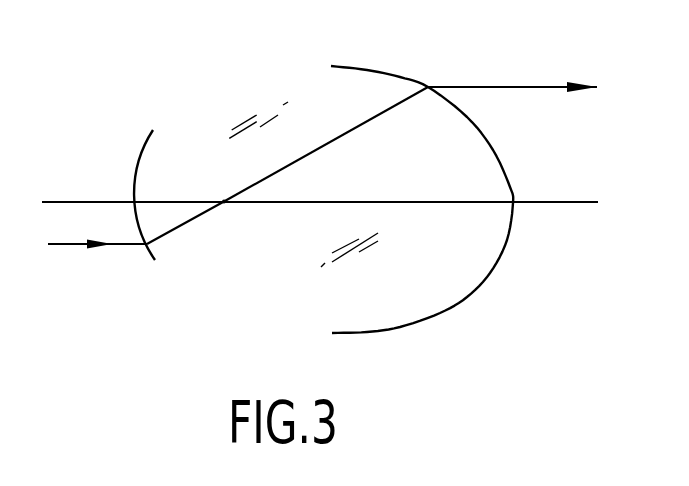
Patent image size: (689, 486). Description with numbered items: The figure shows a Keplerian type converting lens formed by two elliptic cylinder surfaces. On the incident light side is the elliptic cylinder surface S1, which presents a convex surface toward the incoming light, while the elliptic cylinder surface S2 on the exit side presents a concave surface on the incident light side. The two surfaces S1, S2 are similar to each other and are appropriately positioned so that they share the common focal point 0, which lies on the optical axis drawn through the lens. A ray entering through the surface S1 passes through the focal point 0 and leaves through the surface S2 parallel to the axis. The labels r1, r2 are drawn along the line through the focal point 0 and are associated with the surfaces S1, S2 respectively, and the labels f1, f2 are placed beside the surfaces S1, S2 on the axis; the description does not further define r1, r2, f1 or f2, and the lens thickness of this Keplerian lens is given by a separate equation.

The elliptic cylinder surface S1 is at (137, 172).
The elliptic cylinder surface S2 is at (408, 73).
The radius of curvature of first surface r1 is at (185, 232).
The radius of curvature of second surface r2 is at (326, 144).
The focal point 0 is at (215, 184).
The focal length of first surface f1 is at (165, 166).
The focal length of second surface f2 is at (430, 229).